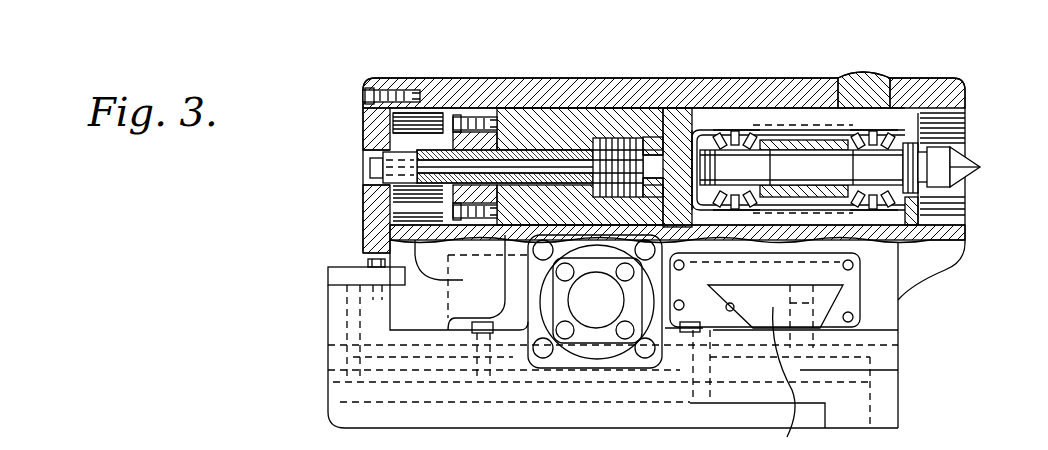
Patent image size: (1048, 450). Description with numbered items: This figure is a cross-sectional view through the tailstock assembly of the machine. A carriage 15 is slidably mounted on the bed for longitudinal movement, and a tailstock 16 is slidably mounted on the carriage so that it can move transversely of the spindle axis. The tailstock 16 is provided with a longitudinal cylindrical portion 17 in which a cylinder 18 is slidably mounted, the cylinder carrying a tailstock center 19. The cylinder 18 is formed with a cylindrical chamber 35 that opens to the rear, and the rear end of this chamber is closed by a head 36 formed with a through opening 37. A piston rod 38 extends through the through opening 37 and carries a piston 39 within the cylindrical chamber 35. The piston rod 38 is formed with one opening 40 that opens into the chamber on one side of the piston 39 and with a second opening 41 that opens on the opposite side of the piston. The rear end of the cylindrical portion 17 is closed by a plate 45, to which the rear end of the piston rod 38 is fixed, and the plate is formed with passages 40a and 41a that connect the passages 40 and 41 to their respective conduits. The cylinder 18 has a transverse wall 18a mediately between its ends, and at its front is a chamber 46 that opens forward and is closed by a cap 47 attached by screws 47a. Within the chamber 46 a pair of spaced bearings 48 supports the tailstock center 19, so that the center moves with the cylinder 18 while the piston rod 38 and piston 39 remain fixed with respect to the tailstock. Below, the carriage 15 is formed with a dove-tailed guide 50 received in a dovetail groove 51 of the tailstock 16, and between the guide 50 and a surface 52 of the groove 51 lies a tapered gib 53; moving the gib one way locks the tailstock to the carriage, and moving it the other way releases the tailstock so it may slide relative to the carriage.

The carriage 15 is at (890, 338).
The tailstock 16 is at (918, 262).
The longitudinal cylindrical portion 17 is at (773, 84).
The cylinder 18 is at (612, 132).
The transverse wall 18a is at (673, 143).
The tailstock center 19 is at (968, 148).
The cylindrical chamber 35 is at (585, 120).
The head 36 is at (493, 117).
The through opening 37 is at (527, 150).
The piston rod 38 is at (552, 135).
The piston 39 is at (642, 112).
The opening 40 is at (425, 177).
The passage 40a is at (387, 177).
The second opening 41 is at (600, 137).
The passage 41a is at (395, 88).
The plate 45 is at (368, 223).
The chamber 46 is at (811, 128).
The cap 47 is at (920, 222).
The screws 47a is at (905, 110).
The bearings 48 is at (732, 126).
The dove-tailed guide 50 is at (797, 378).
The dovetail groove 51 is at (752, 288).
The surface 52 is at (718, 303).
The gib 53 is at (737, 323).